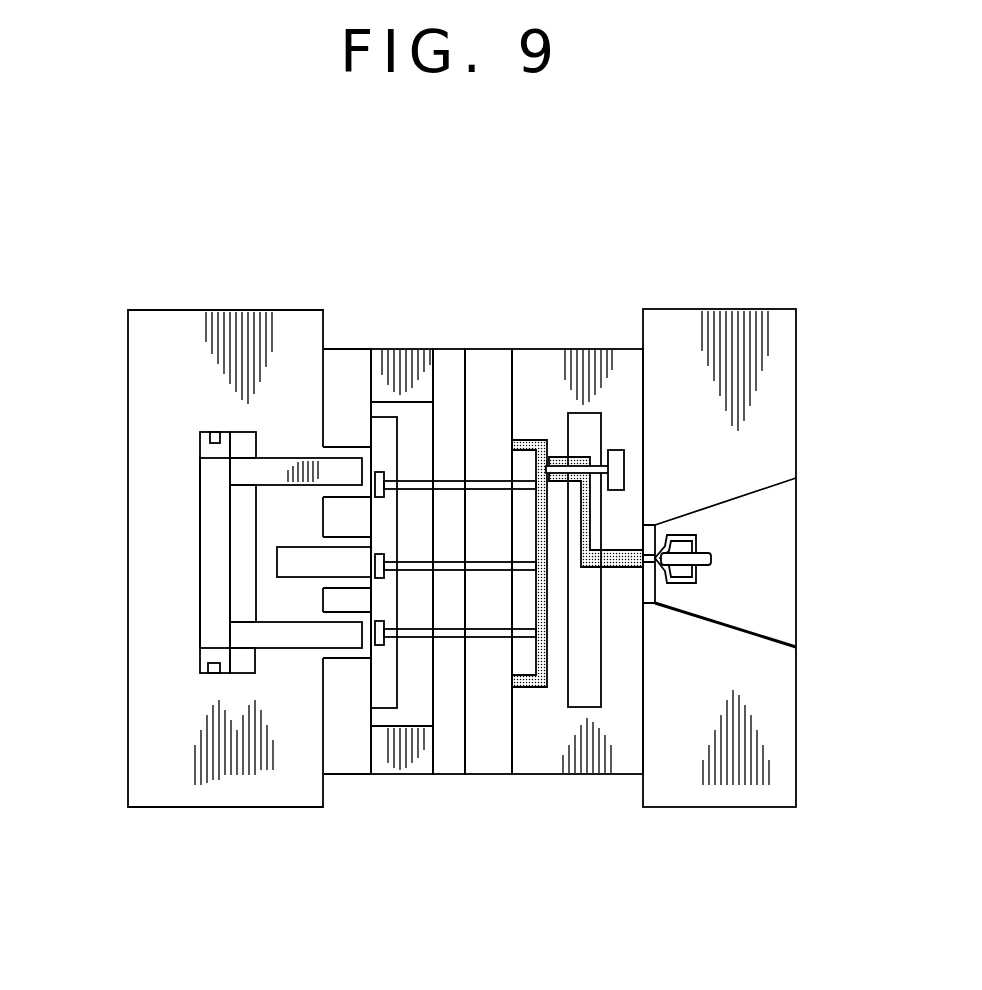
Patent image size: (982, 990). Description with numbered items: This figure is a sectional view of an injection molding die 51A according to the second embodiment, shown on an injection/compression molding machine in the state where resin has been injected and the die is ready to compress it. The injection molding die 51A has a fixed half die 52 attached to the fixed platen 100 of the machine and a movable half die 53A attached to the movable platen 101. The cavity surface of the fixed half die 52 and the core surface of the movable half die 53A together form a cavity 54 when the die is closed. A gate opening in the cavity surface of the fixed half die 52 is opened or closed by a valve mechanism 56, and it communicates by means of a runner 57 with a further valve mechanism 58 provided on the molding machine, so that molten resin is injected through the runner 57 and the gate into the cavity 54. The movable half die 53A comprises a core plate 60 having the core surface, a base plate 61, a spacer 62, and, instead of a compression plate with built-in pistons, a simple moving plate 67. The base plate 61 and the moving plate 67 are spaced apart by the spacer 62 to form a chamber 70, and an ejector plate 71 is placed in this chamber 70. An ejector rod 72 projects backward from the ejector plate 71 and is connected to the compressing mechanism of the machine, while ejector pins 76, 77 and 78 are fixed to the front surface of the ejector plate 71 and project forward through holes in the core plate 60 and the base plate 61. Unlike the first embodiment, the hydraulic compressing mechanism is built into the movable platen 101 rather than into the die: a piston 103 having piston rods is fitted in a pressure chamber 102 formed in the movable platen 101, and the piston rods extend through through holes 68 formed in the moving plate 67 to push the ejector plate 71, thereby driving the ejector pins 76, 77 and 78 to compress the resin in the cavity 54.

The injection molding die 51A is at (454, 583).
The fixed half die 52 is at (575, 545).
The movable half die 53A is at (402, 548).
The cavity 54 is at (547, 663).
The valve mechanism 56 is at (623, 432).
The runner 57 is at (591, 514).
The valve mechanism 58 is at (708, 574).
The core plate 60 is at (507, 350).
The base plate 61 is at (498, 360).
The spacer 62 is at (453, 360).
The moving plate 67 is at (353, 360).
The through holes 68 is at (347, 452).
The chamber 70 is at (349, 548).
The ejector plate 71 is at (380, 690).
The ejector rod 72 is at (287, 560).
The ejector pin 76 is at (492, 481).
The ejector pin 77 is at (496, 562).
The ejector pin 78 is at (492, 629).
The fixed platen 100 is at (697, 333).
The movable platen 101 is at (222, 318).
The pressure chamber 102 is at (243, 438).
The piston 103 is at (210, 600).